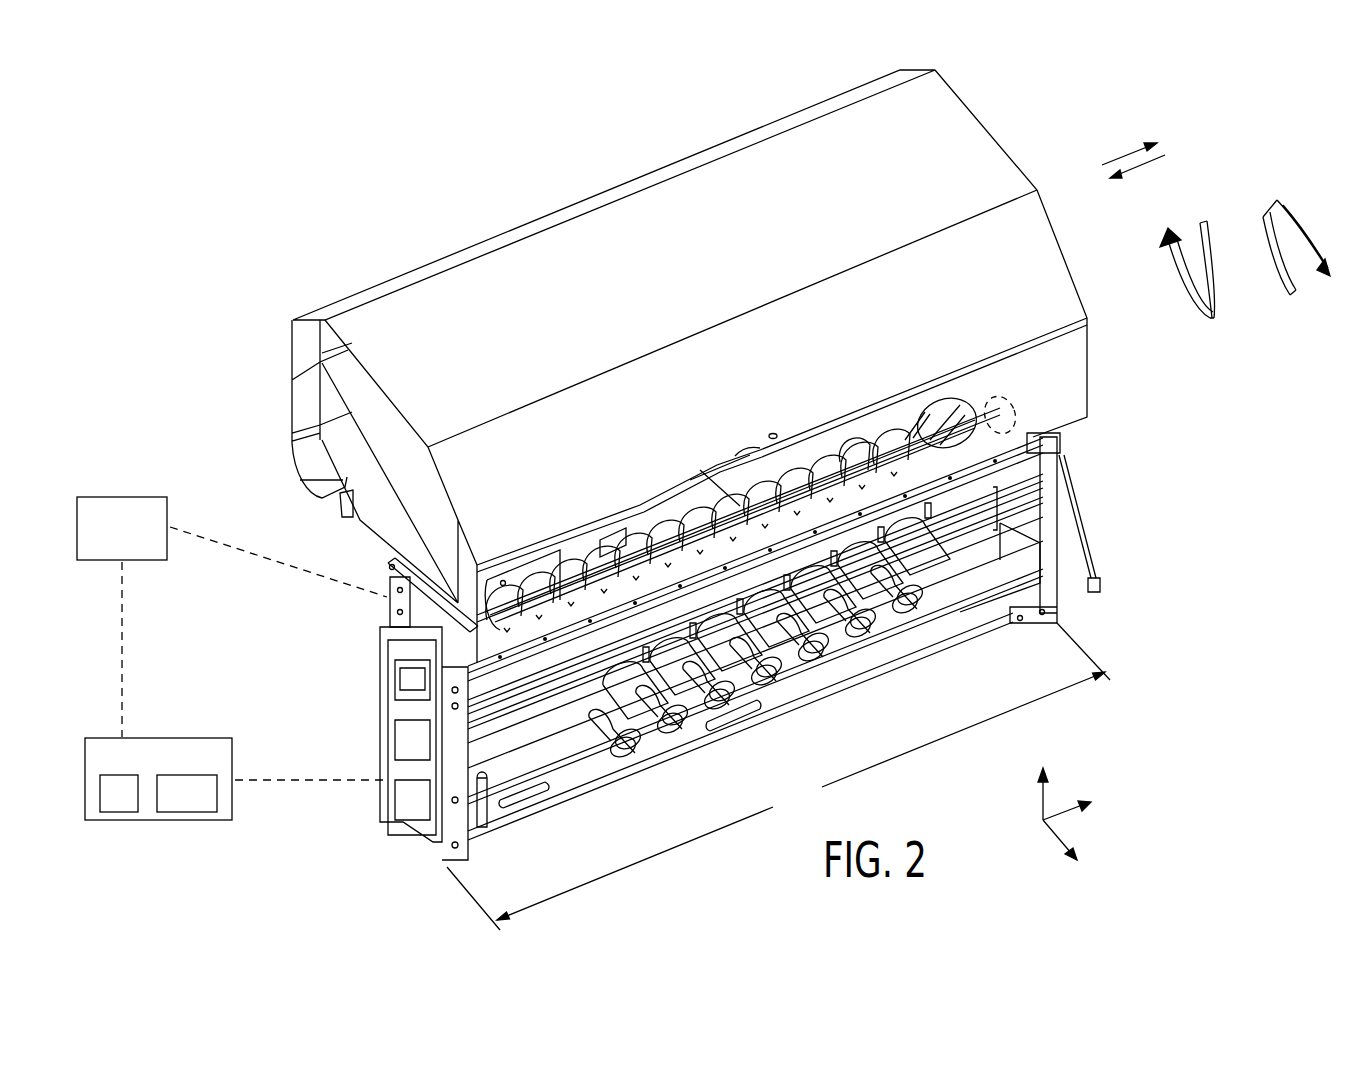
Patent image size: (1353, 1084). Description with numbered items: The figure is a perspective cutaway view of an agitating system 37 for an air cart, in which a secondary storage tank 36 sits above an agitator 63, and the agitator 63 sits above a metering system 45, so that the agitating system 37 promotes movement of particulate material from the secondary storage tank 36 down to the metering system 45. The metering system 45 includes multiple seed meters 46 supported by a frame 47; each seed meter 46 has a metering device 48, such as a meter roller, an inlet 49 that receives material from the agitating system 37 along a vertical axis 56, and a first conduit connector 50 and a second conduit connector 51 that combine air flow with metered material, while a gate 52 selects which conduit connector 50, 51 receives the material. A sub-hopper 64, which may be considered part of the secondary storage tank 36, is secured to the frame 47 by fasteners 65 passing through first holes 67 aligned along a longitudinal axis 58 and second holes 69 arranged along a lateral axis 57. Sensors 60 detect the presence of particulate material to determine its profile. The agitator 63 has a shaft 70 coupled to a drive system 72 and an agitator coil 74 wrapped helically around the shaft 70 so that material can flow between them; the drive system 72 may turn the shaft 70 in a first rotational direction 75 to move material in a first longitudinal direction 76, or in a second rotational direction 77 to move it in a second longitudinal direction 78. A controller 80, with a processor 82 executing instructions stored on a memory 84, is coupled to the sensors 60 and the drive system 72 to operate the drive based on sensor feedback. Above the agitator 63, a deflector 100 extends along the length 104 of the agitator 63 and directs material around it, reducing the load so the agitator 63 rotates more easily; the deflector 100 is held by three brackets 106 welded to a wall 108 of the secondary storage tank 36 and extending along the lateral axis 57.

The secondary storage tank 36 is at (457, 342).
The agitating system 37 is at (1103, 435).
The metering system 45 is at (1067, 520).
The seed meter 46 is at (700, 640).
The frame 47 is at (1058, 538).
The metering device 48 is at (707, 605).
The inlet 49 is at (597, 580).
The first conduit connector 50 is at (608, 790).
The second conduit connector 51 is at (590, 792).
The gate 52 is at (783, 660).
The vertical axis 56 is at (1043, 800).
The lateral axis 57 is at (1052, 838).
The longitudinal axis 58 is at (1060, 815).
The sensor 60 is at (502, 580).
The agitator 63 is at (613, 532).
The sub-hopper 64 is at (773, 438).
The fastener 65 is at (748, 447).
The first hole 67 is at (700, 477).
The second hole 69 is at (393, 703).
The shaft 70 is at (587, 580).
The drive system 72 is at (142, 497).
The agitator coil 74 is at (1010, 403).
The first rotational direction 75 is at (1180, 287).
The first longitudinal direction 76 is at (1123, 157).
The second rotational direction 77 is at (1270, 260).
The second longitudinal direction 78 is at (1147, 165).
The controller 80 is at (193, 738).
The processor 82 is at (120, 812).
The memory 84 is at (202, 812).
The deflector 100 is at (947, 420).
The length 104 is at (778, 776).
The bracket 106 is at (857, 450).
The wall 108 is at (913, 423).